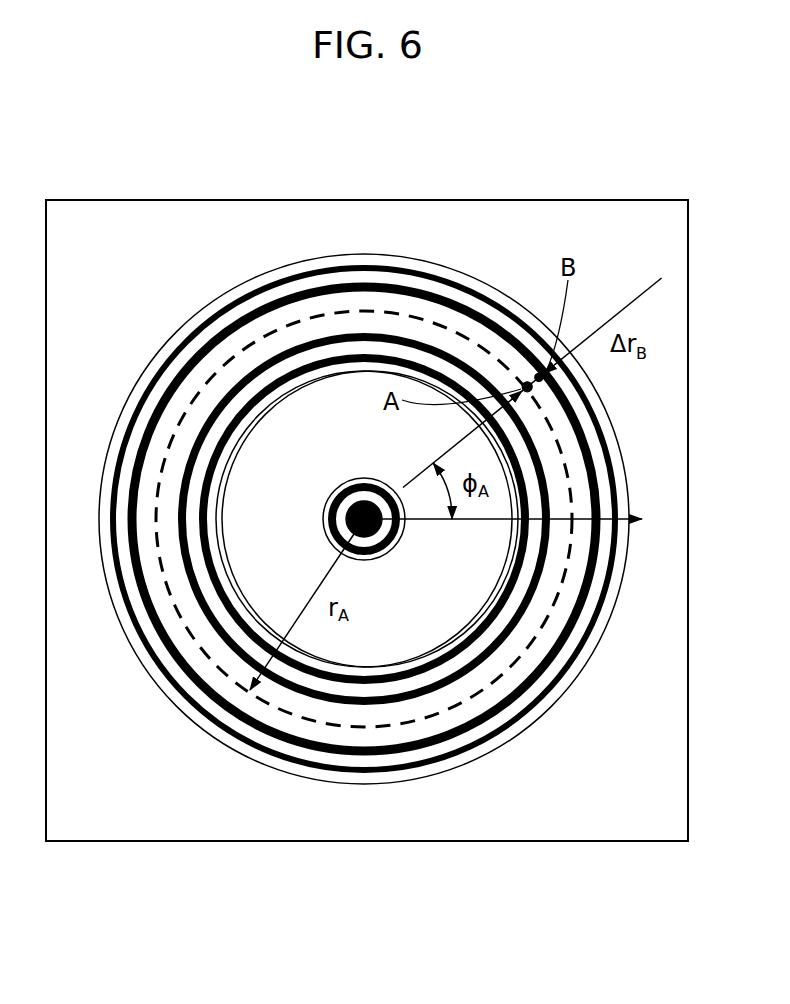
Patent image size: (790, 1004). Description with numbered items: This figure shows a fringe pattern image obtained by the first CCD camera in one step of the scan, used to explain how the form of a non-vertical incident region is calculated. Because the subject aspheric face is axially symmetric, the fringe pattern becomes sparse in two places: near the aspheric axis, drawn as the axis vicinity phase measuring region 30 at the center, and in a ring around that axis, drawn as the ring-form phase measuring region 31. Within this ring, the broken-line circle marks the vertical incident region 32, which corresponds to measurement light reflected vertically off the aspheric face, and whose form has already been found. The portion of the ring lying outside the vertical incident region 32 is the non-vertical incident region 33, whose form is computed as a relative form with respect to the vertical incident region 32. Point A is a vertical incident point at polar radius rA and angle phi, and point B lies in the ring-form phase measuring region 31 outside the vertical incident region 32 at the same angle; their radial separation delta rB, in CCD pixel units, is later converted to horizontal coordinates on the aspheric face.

The axis vicinity phase measuring region 30 is at (354, 502).
The ring-form phase measuring region 31 is at (229, 688).
The vertical incident region 32 is at (537, 642).
The non-vertical incident region 33 is at (393, 735).